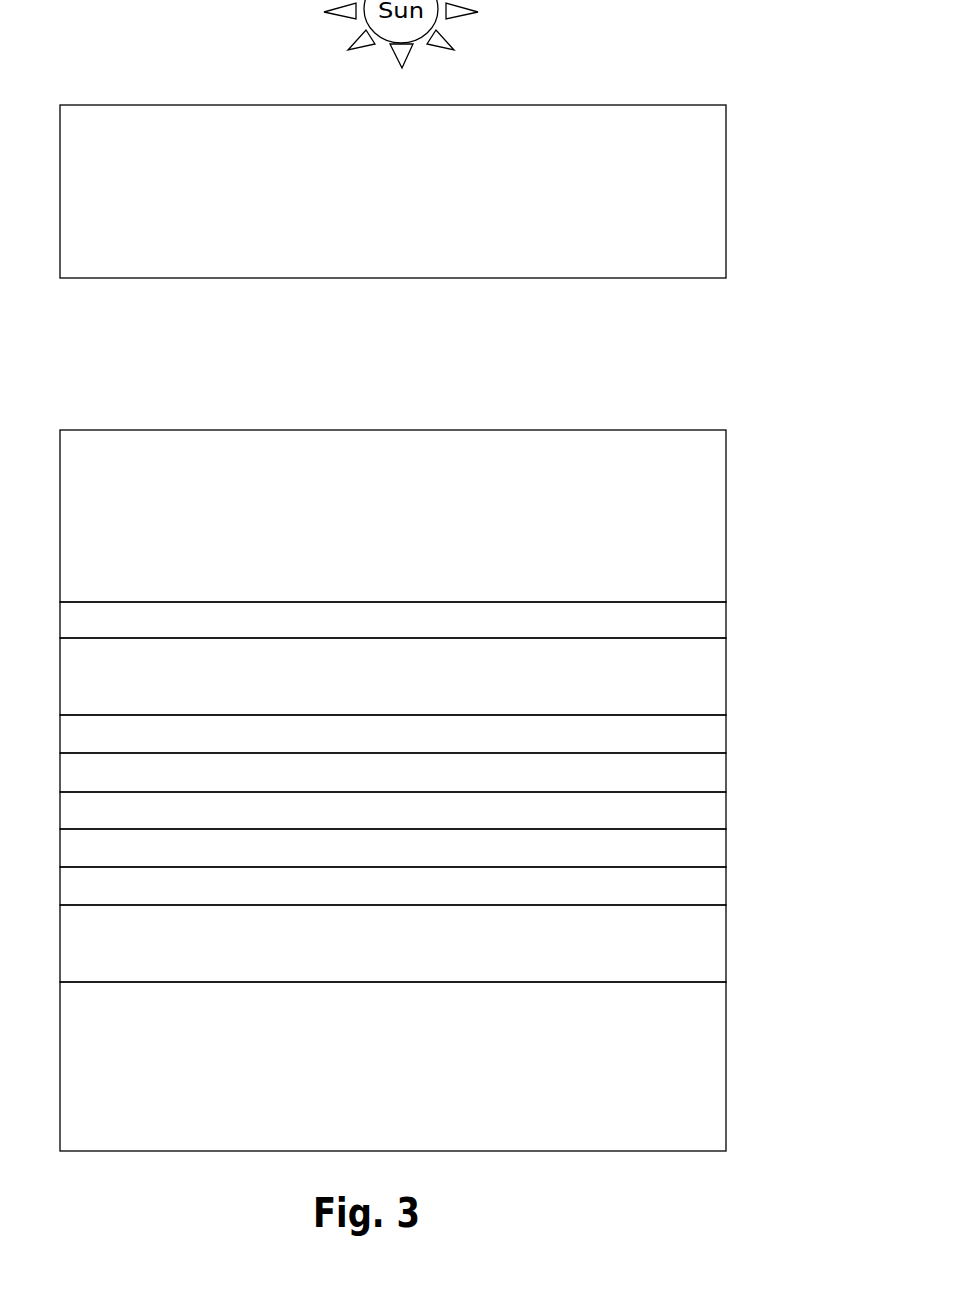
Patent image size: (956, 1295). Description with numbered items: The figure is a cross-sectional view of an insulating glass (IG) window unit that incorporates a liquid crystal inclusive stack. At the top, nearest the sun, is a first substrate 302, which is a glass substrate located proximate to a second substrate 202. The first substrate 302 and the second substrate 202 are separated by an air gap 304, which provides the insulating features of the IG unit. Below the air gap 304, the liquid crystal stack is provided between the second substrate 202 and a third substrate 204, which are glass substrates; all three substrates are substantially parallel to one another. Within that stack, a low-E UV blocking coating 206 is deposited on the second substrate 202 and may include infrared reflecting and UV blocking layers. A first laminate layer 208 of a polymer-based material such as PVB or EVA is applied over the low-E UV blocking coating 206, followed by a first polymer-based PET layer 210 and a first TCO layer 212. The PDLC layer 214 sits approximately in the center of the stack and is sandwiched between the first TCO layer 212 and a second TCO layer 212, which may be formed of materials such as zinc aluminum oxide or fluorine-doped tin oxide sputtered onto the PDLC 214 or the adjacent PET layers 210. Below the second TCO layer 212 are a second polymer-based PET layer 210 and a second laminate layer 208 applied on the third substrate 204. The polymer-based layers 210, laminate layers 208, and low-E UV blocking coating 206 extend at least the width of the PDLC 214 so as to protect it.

The first substrate 302 is at (726, 190).
The air gap 304 is at (405, 369).
The second substrate 202 is at (726, 515).
The low-E UV blocking coating 206 is at (726, 620).
The laminate layer 208 is at (726, 678).
The polymer-based layer 210 is at (726, 735).
The TCO layer 212 is at (726, 772).
The PDLC layer 214 is at (726, 810).
The third substrate 204 is at (726, 1067).